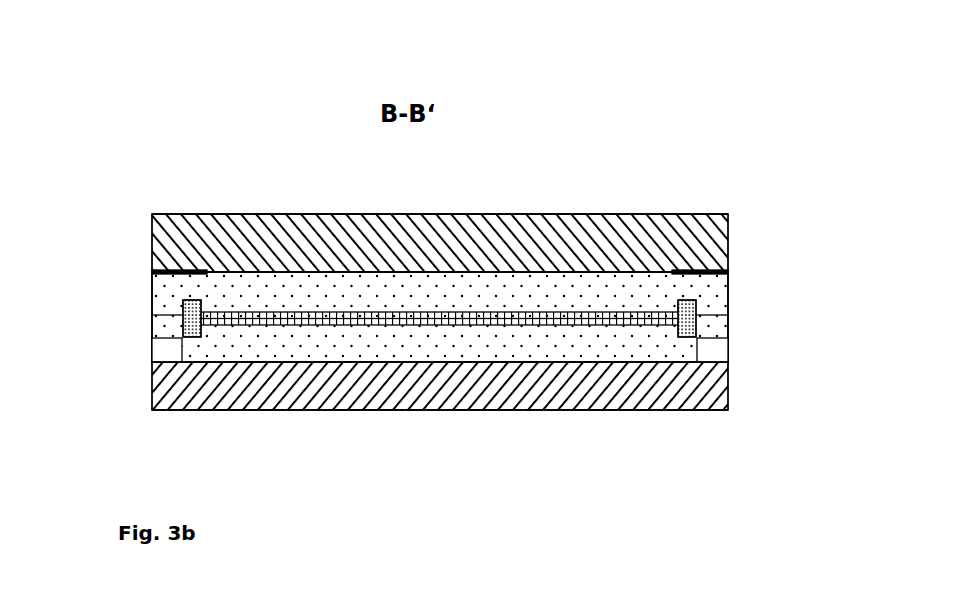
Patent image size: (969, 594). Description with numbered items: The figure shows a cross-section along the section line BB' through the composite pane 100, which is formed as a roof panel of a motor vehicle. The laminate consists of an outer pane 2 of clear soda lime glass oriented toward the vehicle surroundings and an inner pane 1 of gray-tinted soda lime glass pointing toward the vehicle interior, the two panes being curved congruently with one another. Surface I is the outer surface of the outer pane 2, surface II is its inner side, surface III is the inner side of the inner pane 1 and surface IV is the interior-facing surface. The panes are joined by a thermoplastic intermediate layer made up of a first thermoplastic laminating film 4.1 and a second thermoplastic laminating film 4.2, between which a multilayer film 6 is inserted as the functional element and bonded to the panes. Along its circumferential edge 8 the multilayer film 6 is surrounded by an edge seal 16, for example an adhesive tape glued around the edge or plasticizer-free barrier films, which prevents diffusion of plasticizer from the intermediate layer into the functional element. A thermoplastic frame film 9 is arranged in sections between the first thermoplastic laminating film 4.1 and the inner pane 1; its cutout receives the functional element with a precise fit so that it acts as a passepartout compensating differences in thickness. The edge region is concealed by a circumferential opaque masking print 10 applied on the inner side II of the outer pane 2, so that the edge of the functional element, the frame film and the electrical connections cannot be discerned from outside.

The composite pane 100 is at (176, 141).
The inner pane 1 is at (210, 400).
The outer pane 2 is at (176, 215).
The first thermoplastic laminating film 4.1 is at (438, 350).
The second thermoplastic laminating film 4.2 is at (712, 288).
The multilayer film 6 is at (500, 322).
The circumferential edge 8 is at (183, 320).
The thermoplastic frame film 9 is at (173, 350).
The opaque masking print 10 is at (165, 271).
The edge seal 16 is at (183, 309).
The first interface I is at (513, 215).
The inner side of the outer pane II is at (583, 268).
The inner side of the inner pane III is at (313, 363).
The fourth interface IV is at (383, 410).